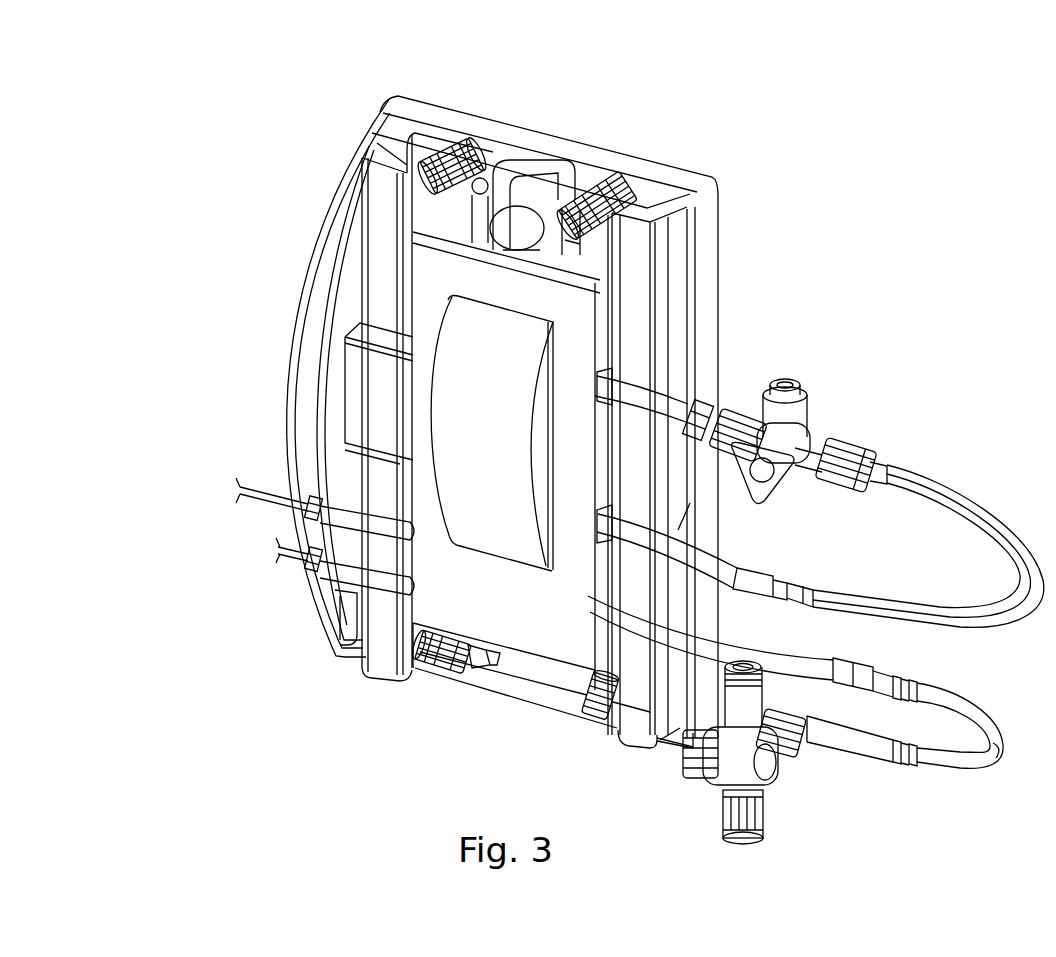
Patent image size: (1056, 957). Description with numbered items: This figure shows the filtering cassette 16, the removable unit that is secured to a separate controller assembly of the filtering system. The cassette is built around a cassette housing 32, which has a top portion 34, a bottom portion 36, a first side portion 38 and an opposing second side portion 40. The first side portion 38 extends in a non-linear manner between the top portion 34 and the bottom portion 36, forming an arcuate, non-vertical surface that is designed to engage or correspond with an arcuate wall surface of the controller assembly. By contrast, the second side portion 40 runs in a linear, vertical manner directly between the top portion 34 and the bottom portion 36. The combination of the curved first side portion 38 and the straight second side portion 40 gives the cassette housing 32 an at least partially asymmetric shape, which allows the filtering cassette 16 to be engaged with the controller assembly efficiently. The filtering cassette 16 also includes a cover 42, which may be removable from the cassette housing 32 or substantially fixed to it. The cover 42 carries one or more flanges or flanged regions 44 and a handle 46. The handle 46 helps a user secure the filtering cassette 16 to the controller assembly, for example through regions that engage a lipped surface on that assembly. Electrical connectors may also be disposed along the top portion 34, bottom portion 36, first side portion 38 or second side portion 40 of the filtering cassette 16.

The filtering cassette 16 is at (240, 260).
The cassette housing 32 is at (495, 100).
The top portion 34 is at (610, 163).
The bottom portion 36 is at (520, 697).
The first side portion 38 is at (320, 223).
The second side portion 40 is at (707, 280).
The cover 42 is at (461, 569).
The flanged region 44 is at (377, 387).
The handle 46 is at (443, 447).